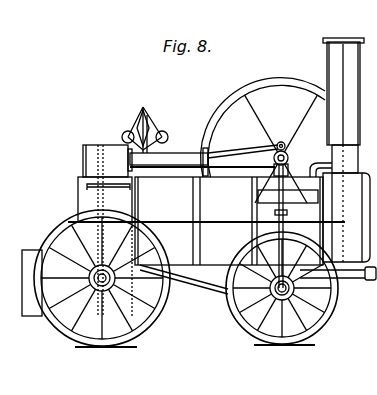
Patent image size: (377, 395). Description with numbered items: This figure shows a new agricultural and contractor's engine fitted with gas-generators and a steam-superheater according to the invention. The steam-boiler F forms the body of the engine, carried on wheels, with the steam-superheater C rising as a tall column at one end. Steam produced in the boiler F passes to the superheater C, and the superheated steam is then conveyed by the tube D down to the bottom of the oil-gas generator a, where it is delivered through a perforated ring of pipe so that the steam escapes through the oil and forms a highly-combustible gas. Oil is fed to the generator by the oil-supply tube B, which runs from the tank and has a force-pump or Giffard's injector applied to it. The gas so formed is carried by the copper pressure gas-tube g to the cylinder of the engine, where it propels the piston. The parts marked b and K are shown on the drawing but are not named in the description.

The steam-boiler F is at (199, 256).
The rear wheel hub b is at (102, 278).
The guide box K is at (105, 237).
The oil-supply tube B is at (206, 224).
The copper pressure gas-tube g is at (230, 161).
The steam-superheater C is at (343, 91).
The tube from superheater to gas-generator D is at (348, 153).
The oil-gas generator a is at (346, 203).